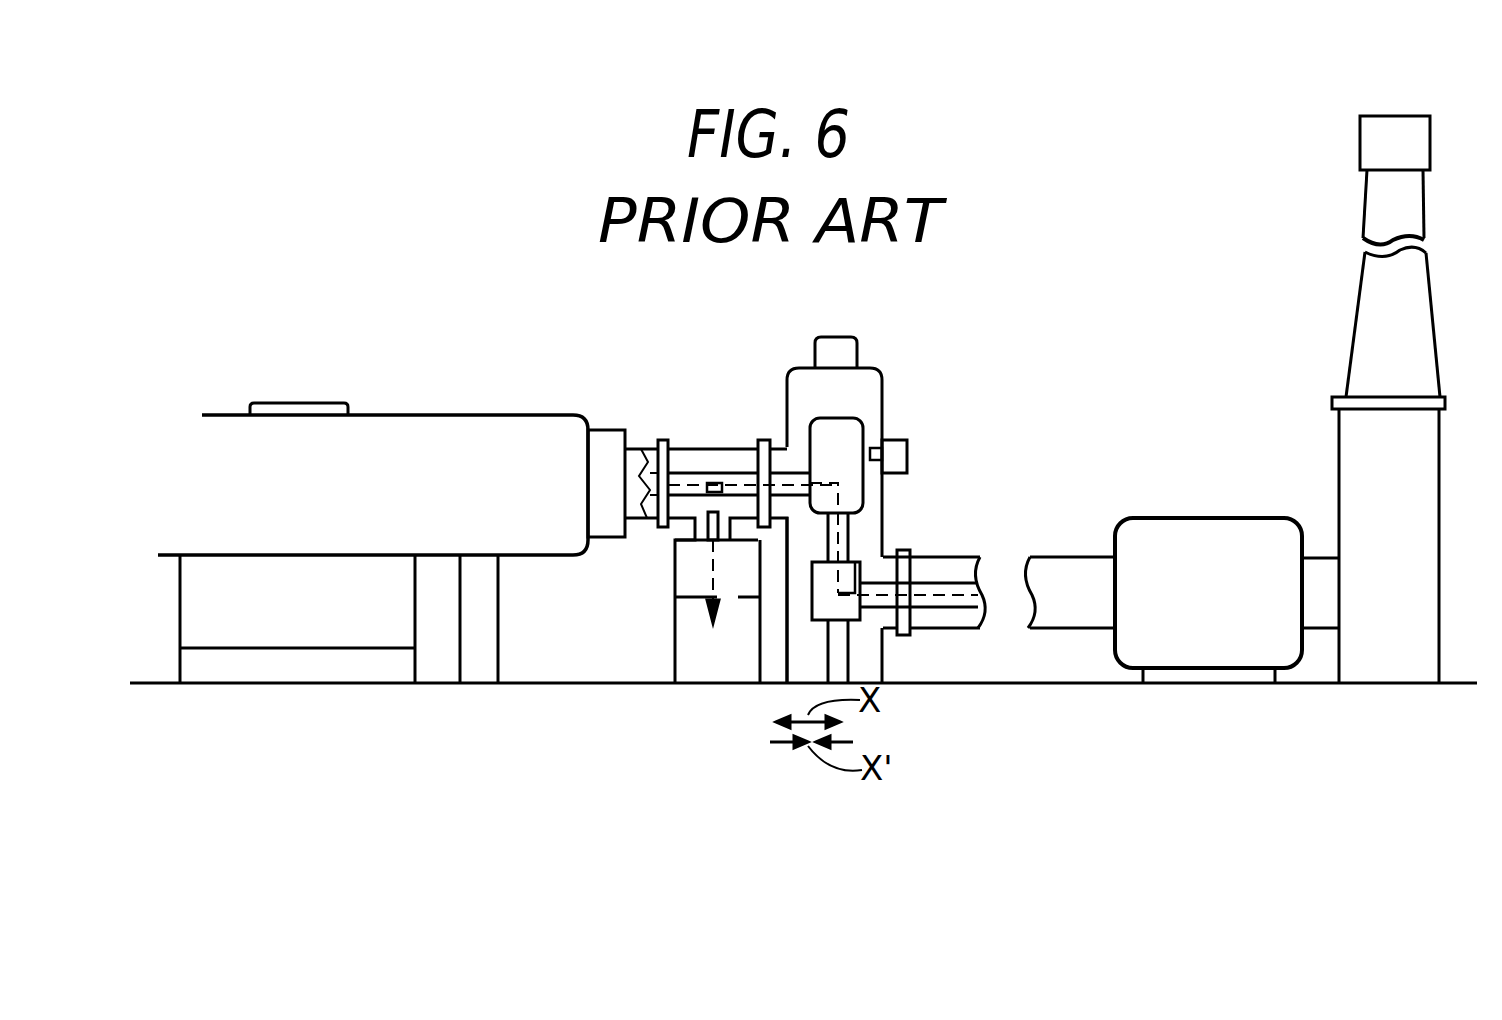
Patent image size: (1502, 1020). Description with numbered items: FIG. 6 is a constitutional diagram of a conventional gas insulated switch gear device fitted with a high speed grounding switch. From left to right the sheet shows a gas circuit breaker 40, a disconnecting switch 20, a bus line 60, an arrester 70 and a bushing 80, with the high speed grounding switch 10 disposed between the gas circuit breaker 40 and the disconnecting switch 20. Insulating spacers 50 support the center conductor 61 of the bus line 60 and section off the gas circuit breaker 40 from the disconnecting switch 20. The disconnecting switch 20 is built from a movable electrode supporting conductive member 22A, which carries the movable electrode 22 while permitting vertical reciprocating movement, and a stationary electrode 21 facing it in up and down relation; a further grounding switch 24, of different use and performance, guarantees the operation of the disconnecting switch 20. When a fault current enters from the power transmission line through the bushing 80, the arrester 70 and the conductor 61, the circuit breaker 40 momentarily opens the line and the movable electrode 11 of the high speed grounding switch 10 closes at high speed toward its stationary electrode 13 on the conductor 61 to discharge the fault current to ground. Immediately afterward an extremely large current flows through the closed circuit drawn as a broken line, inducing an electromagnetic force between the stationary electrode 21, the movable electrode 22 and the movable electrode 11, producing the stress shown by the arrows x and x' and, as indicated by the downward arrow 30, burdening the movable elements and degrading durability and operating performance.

The high speed grounding switch 10 is at (675, 605).
The movable electrode 11 is at (707, 523).
The stationary electrode 13 is at (713, 481).
The disconnecting switch 20 is at (868, 368).
The stationary electrode 21 is at (850, 578).
The movable electrode 22 is at (845, 527).
The movable electrode supporting conductive member 22A is at (845, 435).
The grounding switch 24 is at (925, 456).
The displacement direction 30 is at (717, 577).
The gas circuit breaker 40 is at (455, 425).
The insulating spacer 50 is at (660, 438).
The bus line 60 is at (1012, 557).
The conductor 61 is at (683, 483).
The arrester 70 is at (1222, 525).
The bushing 80 is at (1410, 200).